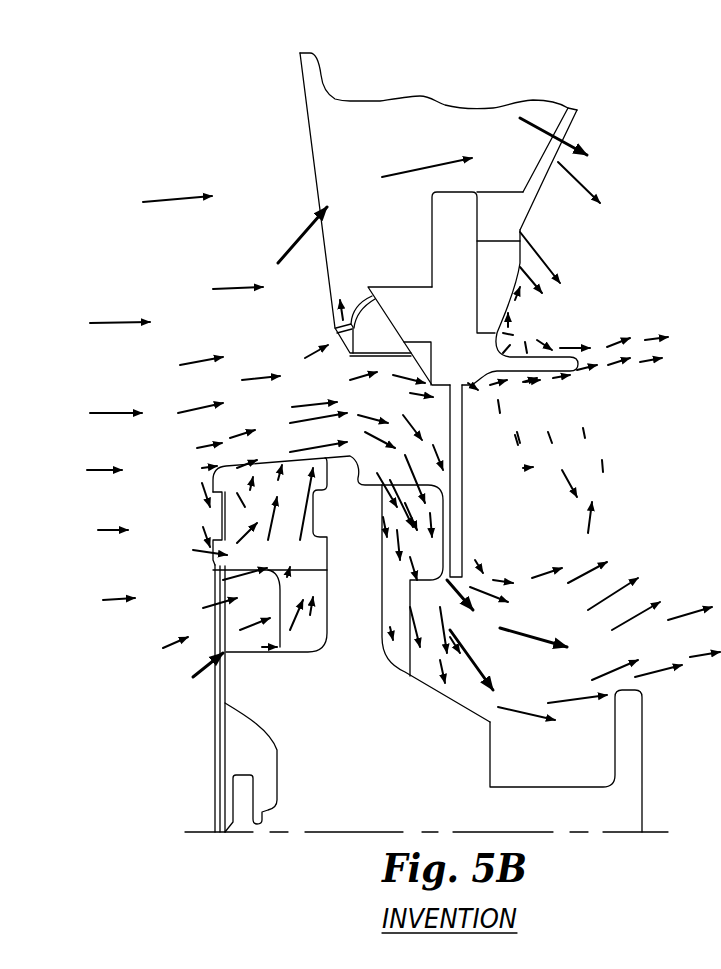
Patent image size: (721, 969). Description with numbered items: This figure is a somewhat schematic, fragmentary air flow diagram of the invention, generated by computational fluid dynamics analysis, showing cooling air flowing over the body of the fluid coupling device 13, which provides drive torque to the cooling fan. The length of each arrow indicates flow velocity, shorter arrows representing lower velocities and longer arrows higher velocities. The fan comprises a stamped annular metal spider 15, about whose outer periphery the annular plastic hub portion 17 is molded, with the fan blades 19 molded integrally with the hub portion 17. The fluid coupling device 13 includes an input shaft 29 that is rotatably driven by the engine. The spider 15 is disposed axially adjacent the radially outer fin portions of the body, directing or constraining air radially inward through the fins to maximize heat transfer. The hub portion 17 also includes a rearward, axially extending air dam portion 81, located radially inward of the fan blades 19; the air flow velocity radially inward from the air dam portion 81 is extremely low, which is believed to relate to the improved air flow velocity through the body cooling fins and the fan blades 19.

The fluid coupling device 13 is at (203, 740).
The spider 15 is at (455, 502).
The hub portion 17 is at (443, 263).
The fan blades 19 is at (318, 130).
The input shaft 29 is at (575, 806).
The air dam portion 81 is at (548, 365).